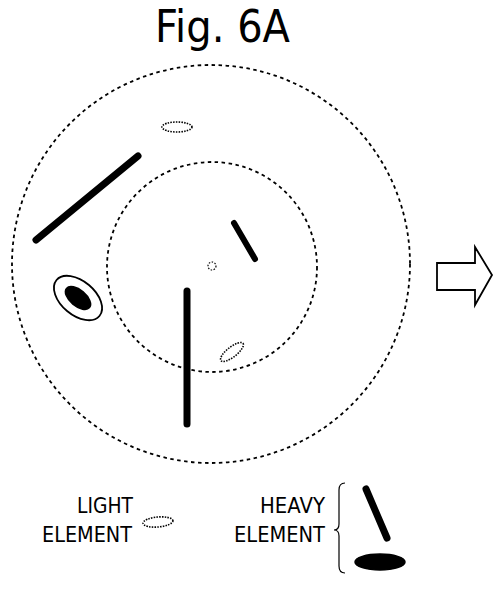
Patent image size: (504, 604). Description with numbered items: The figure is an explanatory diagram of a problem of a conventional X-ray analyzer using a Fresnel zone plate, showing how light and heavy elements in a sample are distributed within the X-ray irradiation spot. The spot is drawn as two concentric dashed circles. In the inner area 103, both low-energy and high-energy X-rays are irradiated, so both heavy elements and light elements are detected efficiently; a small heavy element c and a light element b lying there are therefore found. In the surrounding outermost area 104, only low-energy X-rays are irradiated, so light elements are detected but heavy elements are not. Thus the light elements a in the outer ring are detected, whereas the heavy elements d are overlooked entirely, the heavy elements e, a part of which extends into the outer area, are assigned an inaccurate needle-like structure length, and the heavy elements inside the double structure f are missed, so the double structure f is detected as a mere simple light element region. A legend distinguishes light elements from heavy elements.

The inner area 103 is at (280, 197).
The outermost area 104 is at (343, 128).
The light elements a is at (177, 116).
The light element b is at (238, 342).
The heavy element c is at (251, 241).
The heavy elements d is at (87, 198).
The heavy elements e is at (177, 357).
The double structure f is at (78, 301).